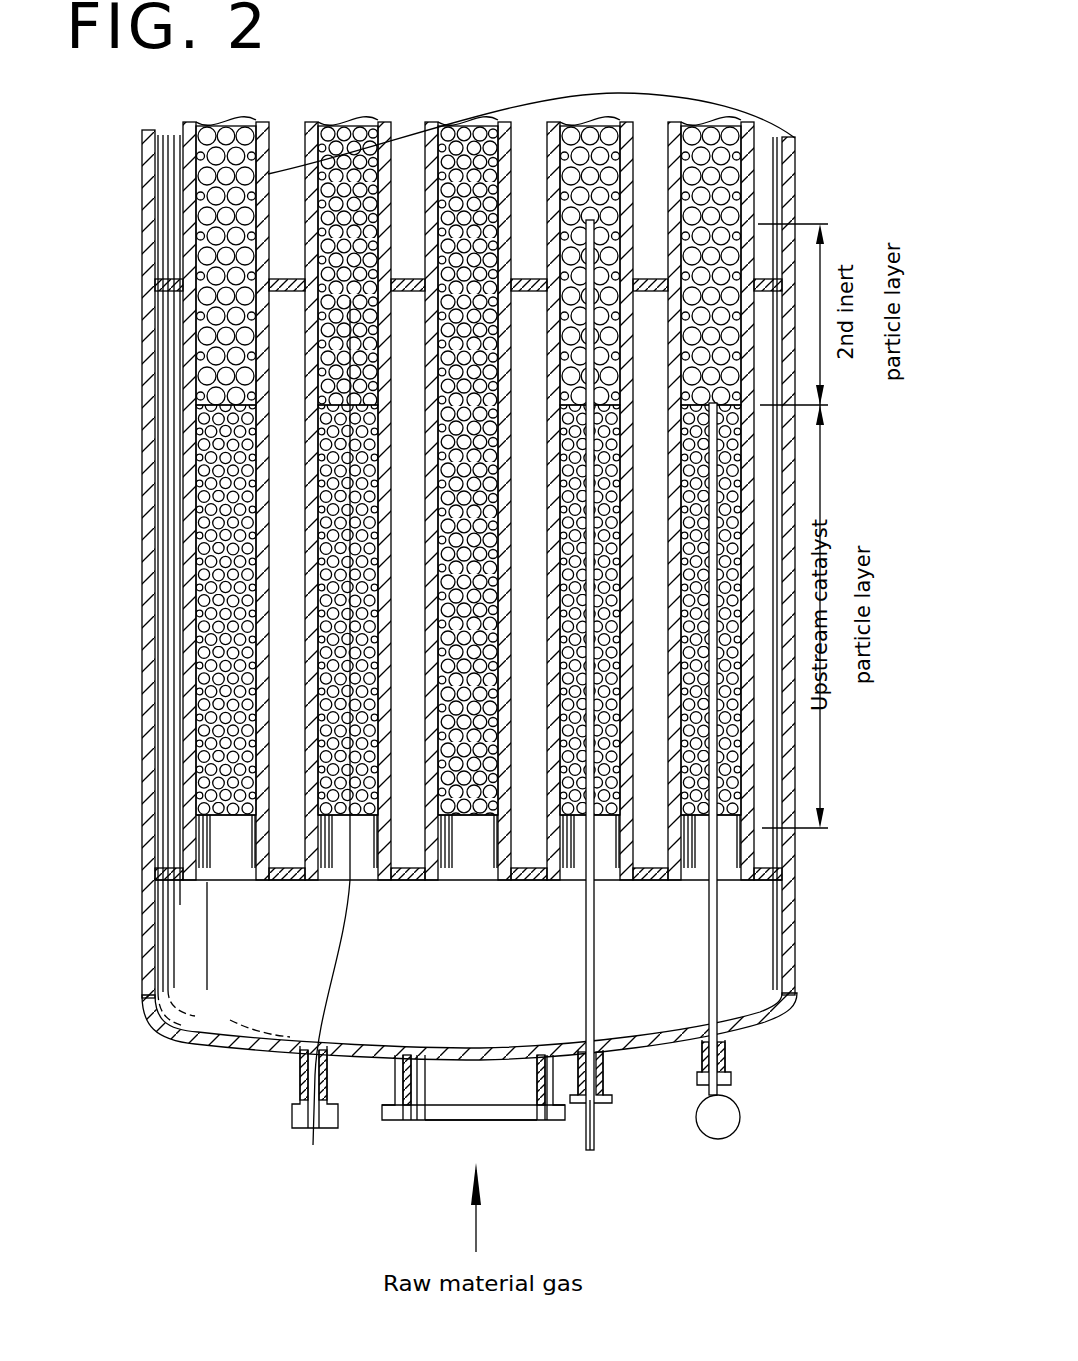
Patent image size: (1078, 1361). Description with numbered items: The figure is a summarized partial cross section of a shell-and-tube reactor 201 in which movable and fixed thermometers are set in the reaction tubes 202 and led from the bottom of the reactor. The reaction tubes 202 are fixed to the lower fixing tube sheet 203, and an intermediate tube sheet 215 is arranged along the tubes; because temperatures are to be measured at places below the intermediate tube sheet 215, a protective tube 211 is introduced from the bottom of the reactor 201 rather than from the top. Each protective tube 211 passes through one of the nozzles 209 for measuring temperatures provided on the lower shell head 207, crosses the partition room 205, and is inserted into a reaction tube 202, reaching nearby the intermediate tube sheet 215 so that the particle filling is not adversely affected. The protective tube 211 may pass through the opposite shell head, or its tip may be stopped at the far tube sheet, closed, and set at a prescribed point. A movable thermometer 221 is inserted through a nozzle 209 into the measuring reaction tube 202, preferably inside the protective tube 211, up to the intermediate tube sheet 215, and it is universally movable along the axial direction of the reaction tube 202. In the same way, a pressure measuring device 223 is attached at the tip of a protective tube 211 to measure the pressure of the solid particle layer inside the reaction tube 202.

The reactor 201 is at (186, 476).
The reaction tubes 202 is at (312, 662).
The lower fixing tube sheet 203 is at (172, 870).
The partition room 205 is at (258, 968).
The lower shell head 207 is at (170, 1040).
The nozzles 209 is at (298, 1076).
The protective tube 211 is at (585, 966).
The intermediate tube sheet 215 is at (156, 289).
The movable thermometer 221 is at (348, 505).
The pressure measuring device 223 is at (720, 1140).